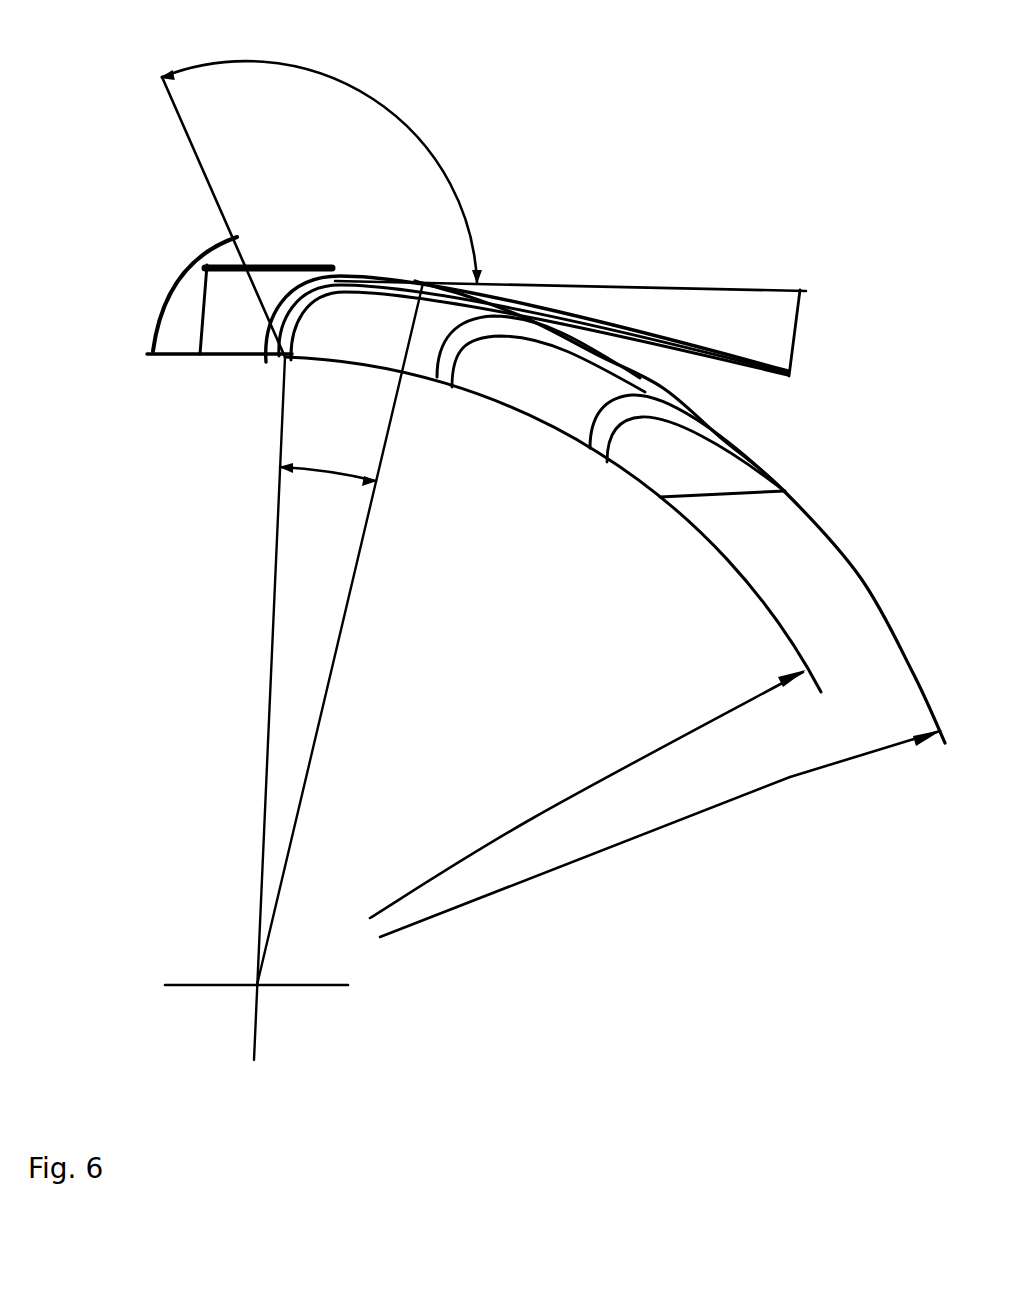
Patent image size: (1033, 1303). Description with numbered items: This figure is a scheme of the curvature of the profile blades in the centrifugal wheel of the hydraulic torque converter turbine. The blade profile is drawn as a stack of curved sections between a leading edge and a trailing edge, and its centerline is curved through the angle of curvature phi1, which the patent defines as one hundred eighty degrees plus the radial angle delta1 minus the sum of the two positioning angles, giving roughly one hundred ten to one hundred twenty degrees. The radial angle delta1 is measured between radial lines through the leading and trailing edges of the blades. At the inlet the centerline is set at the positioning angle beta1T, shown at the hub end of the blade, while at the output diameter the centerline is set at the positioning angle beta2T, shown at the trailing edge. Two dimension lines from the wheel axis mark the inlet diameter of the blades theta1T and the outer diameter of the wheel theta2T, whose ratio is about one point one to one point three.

The angle of curvature of the blade profile centerline phi1 is at (321, 149).
The angle of positioning of the profile centerline at the inlet diameter beta1T is at (176, 285).
The radial angle between the leading and trailing edges delta1 is at (328, 451).
The angle of positioning of the profile centerline at the output diameter beta2T is at (613, 328).
The inlet diameter of the blades theta1T is at (588, 794).
The outer diameter of the wheel theta2T is at (661, 833).